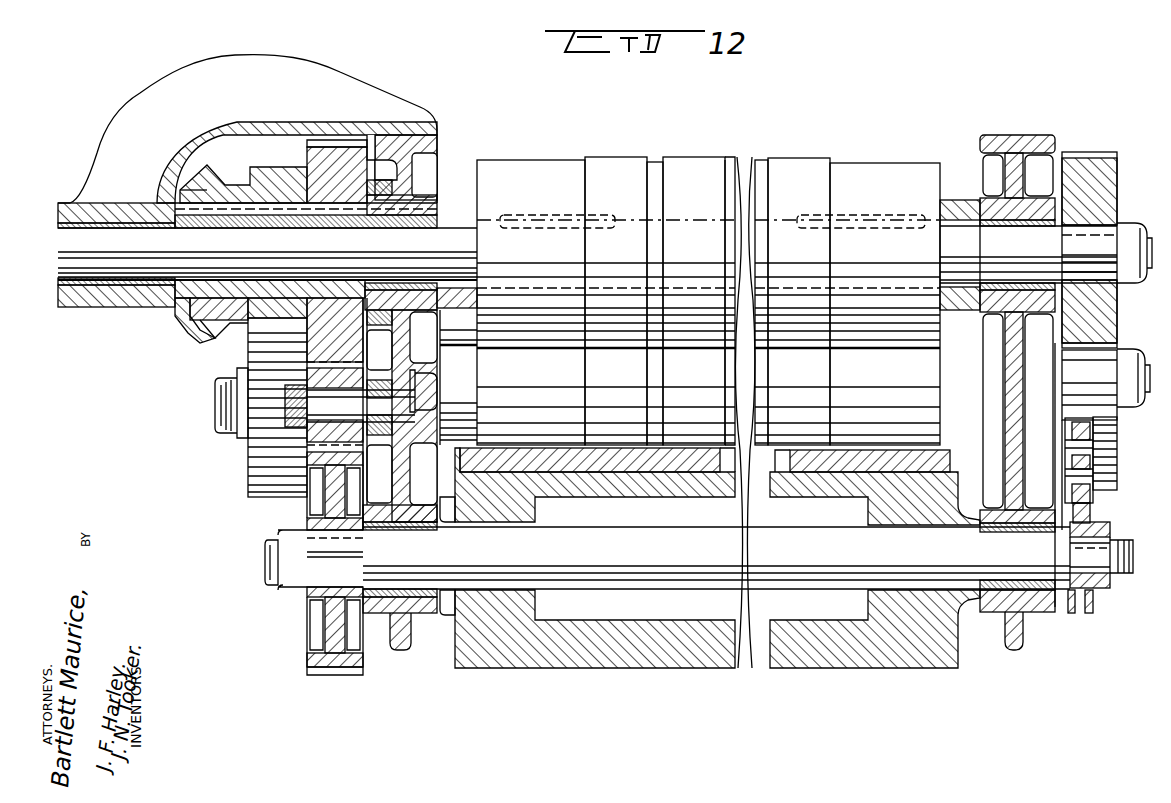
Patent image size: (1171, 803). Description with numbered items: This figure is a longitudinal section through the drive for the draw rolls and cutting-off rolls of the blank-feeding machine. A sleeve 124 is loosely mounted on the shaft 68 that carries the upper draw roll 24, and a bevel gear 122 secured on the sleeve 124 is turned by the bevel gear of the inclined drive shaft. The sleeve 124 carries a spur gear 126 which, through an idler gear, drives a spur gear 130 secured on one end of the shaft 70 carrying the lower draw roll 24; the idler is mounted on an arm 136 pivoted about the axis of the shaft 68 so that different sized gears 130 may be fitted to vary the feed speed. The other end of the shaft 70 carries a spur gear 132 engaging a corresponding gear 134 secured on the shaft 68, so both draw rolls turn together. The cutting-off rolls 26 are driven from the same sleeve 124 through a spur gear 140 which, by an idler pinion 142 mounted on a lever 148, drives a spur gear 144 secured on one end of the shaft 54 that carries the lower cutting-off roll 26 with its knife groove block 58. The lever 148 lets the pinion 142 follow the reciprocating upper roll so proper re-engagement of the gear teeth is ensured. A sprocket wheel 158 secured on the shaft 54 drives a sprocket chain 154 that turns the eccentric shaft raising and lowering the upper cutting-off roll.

The draw roll 24 is at (692, 160).
The cutting-off roll 26 is at (590, 670).
The lower cutting-off roll shaft 54 is at (637, 572).
The knife groove block 58 is at (680, 458).
The upper draw roll carrying shaft 68 is at (102, 262).
The lower draw roll shaft 70 is at (215, 407).
The bevel gear 122 is at (230, 322).
The sleeve 124 is at (190, 322).
The spur gear 126 is at (275, 188).
The spur gear 130 is at (250, 487).
The spur gear 132 is at (1108, 458).
The gear 134 is at (1086, 175).
The arm 136 is at (380, 190).
The spur gear 140 is at (333, 160).
The idler pinion 142 is at (330, 425).
The spur gear 144 is at (332, 497).
The lever 148 is at (405, 375).
The sprocket chain 154 is at (1096, 495).
The sprocket wheel 158 is at (1093, 535).